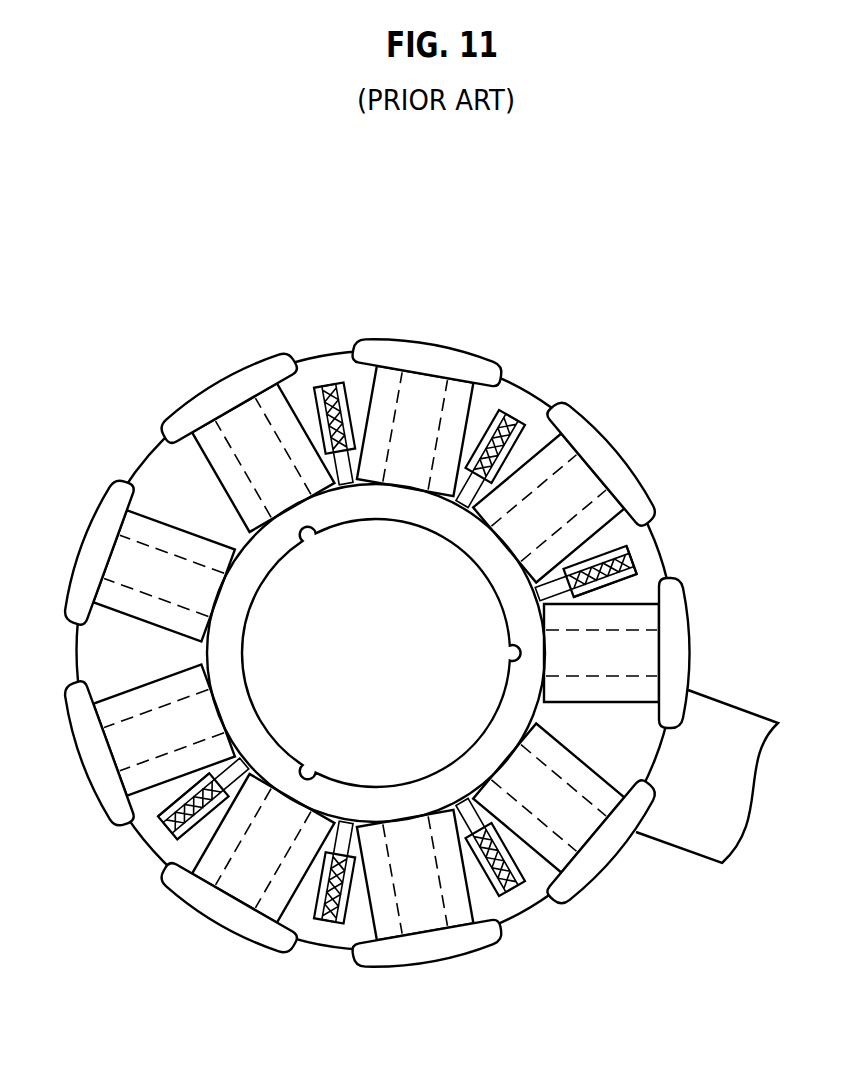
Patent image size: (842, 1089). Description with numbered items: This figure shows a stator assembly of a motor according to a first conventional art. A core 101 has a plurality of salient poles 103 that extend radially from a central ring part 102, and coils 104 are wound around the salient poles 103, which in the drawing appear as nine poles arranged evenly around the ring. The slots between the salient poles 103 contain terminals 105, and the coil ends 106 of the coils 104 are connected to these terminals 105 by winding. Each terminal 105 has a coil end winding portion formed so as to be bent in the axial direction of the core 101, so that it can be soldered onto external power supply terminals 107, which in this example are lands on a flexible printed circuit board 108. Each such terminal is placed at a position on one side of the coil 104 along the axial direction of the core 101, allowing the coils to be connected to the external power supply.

The core 101 is at (122, 485).
The ring part 102 is at (230, 597).
The salient poles 103 is at (90, 550).
The coils 104 is at (608, 647).
The terminals 105 is at (467, 487).
The coil ends 106 is at (605, 596).
The external power supply terminals 107 is at (333, 385).
The flexible printed circuit board 108 is at (640, 578).